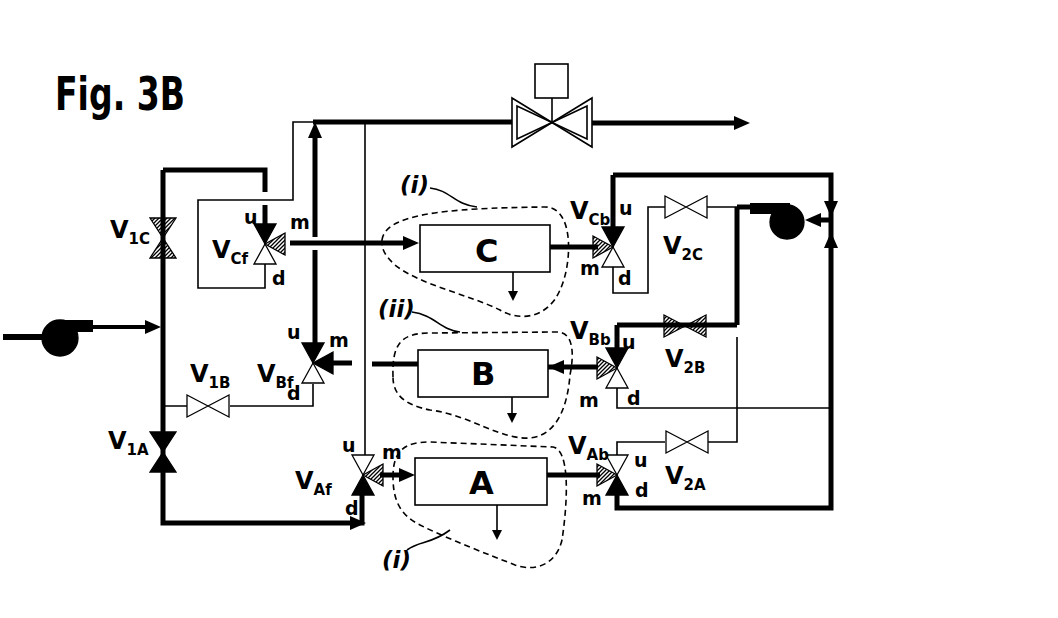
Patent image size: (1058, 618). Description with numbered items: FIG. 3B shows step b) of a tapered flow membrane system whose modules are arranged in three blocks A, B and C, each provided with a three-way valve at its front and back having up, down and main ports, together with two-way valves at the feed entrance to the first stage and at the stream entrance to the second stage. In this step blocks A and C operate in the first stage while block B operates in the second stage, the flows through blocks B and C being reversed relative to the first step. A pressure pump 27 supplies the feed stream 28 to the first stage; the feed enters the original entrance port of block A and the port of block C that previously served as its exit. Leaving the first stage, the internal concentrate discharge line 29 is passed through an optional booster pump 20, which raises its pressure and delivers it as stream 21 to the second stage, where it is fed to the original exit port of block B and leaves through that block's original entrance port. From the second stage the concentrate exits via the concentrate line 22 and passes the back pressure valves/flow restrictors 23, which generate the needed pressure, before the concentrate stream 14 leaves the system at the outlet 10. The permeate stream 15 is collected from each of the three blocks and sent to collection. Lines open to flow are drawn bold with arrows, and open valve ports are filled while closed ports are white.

The product outlet 10 is at (727, 95).
The concentrate stream 14 is at (670, 122).
The permeate stream 15 is at (524, 406).
The booster pump 20 is at (760, 237).
The stream 21 is at (747, 207).
The concentrate line 22 is at (453, 120).
The back pressure valves/flow restrictors 23 is at (518, 110).
The pressure pump 27 is at (18, 333).
The feed stream 28 is at (113, 324).
The internal concentrate discharge line 29 is at (823, 213).